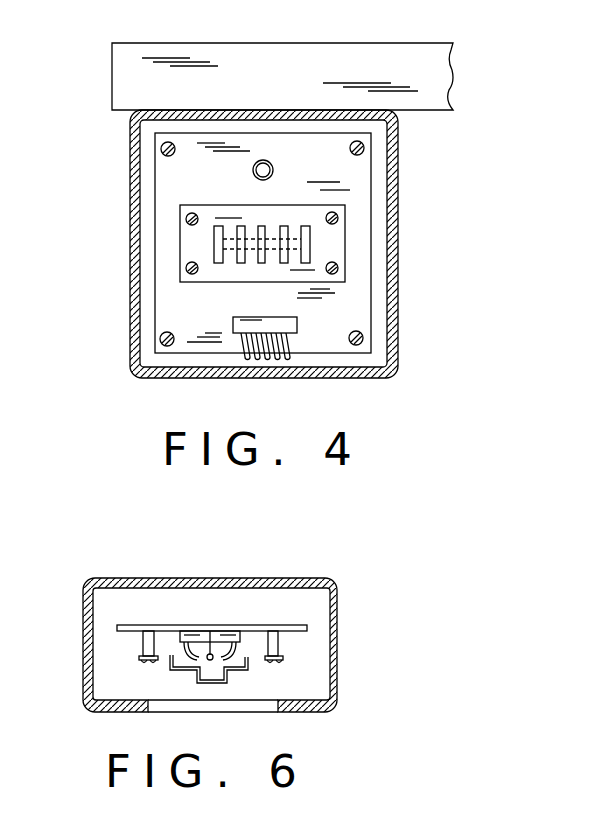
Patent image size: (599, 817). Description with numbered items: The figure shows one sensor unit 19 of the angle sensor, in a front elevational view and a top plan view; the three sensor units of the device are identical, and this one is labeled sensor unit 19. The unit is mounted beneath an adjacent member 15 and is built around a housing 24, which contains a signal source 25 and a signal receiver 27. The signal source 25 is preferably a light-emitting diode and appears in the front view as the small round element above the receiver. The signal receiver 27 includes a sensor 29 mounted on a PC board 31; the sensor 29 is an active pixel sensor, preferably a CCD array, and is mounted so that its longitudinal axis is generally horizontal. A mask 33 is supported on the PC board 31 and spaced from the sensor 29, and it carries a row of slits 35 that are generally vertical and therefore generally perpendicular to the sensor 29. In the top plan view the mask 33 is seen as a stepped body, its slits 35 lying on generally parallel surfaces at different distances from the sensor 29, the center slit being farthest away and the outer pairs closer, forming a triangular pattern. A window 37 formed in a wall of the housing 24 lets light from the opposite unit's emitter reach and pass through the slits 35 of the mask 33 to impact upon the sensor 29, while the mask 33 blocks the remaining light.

In FIG. 4, the steering wheel / mounting surface 15 is at (415, 43).
In FIG. 4, the sensor unit 19 is at (410, 322).
In FIG. 6, the sensor unit 19 is at (120, 568).
In FIG. 4, the housing 24 is at (130, 145).
In FIG. 6, the housing 24 is at (213, 578).
In FIG. 4, the signal source 25 is at (266, 160).
In FIG. 4, the signal receiver 27 is at (328, 195).
In FIG. 4, the sensor 29 is at (288, 243).
In FIG. 6, the sensor 29 is at (198, 637).
In FIG. 4, the PC board 31 is at (165, 206).
In FIG. 6, the PC board 31 is at (260, 625).
In FIG. 4, the mask 33 is at (192, 247).
In FIG. 6, the mask 33 is at (168, 681).
In FIG. 4, the slits 35 is at (288, 227).
In FIG. 6, the window 37 is at (280, 712).